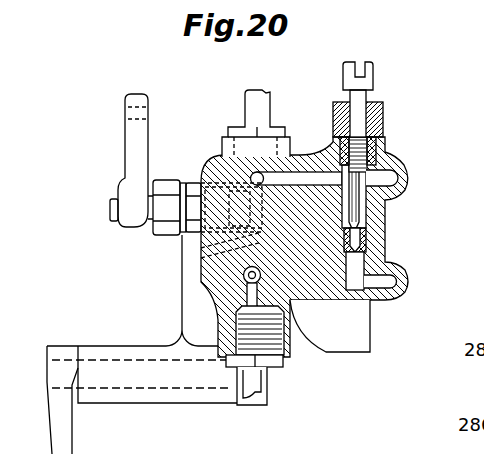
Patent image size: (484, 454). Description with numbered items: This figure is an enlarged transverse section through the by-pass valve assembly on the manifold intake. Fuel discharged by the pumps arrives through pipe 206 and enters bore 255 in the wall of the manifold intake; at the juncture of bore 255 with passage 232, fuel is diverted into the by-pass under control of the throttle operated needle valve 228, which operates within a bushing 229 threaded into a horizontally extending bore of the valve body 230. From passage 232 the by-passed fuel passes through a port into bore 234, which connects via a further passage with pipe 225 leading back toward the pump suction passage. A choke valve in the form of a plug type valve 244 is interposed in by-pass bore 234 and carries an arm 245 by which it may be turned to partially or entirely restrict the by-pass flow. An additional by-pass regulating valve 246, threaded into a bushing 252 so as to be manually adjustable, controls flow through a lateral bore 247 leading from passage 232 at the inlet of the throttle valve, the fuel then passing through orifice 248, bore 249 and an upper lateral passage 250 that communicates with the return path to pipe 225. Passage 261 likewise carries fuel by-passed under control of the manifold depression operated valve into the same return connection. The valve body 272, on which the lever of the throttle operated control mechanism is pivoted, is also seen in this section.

The pipe 206 is at (253, 380).
The pipe 225 is at (252, 103).
The needle valve 228 is at (246, 288).
The bushing 229 is at (243, 273).
The valve body 230 is at (240, 308).
The passage 232 is at (322, 338).
The bore 234 is at (216, 265).
The plug type valve 244 is at (216, 247).
The arm 245 is at (130, 145).
The by-pass regulating valve 246 is at (383, 126).
The lateral bore 247 is at (333, 298).
The orifice 248 is at (368, 245).
The bore 249 is at (356, 207).
The upper lateral passage 250 is at (303, 180).
The bushing 252 is at (385, 150).
The bore 255 is at (397, 281).
The passage 261 is at (398, 180).
The valve body 272 is at (157, 390).